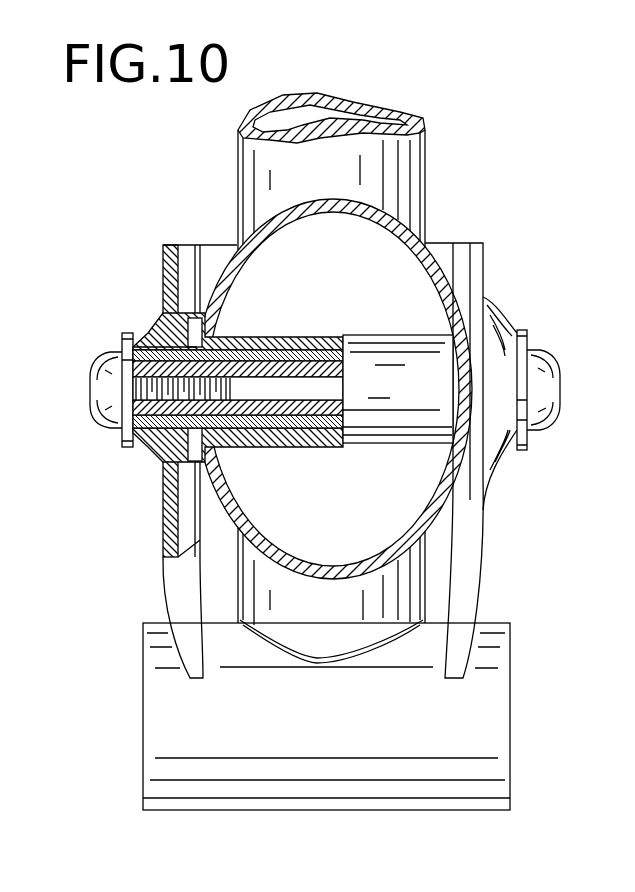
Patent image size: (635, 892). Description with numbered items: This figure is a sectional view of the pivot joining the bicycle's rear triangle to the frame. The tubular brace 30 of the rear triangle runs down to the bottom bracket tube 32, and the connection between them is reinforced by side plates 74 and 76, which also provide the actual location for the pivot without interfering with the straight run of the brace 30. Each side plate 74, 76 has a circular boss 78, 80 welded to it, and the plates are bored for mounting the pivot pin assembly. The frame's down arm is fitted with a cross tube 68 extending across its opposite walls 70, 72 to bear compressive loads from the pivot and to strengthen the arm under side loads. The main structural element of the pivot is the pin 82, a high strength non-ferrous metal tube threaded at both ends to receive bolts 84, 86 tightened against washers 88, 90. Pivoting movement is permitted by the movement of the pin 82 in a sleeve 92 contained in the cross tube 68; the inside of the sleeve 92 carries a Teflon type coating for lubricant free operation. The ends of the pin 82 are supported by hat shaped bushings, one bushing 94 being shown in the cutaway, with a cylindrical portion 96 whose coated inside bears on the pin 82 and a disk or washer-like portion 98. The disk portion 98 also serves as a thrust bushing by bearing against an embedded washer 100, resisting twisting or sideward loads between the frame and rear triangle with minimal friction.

The brace 30 is at (408, 192).
The bottom bracket tube 32 is at (374, 767).
The cross tube 68 is at (387, 420).
The wall 70 is at (488, 317).
The wall 72 is at (236, 252).
The side plate 74 is at (170, 583).
The side plate 76 is at (481, 553).
The circular boss 78 is at (510, 321).
The circular boss 80 is at (153, 347).
The pin 82 is at (317, 378).
The bolt 84 is at (90, 388).
The bolt 86 is at (561, 389).
The washer 88 is at (127, 445).
The washer 90 is at (528, 338).
The sleeve 92 is at (265, 372).
The bushing 94 is at (157, 347).
The cylindrical portion 96 is at (150, 452).
The disk portion 98 is at (163, 458).
The embedded washer 100 is at (213, 456).